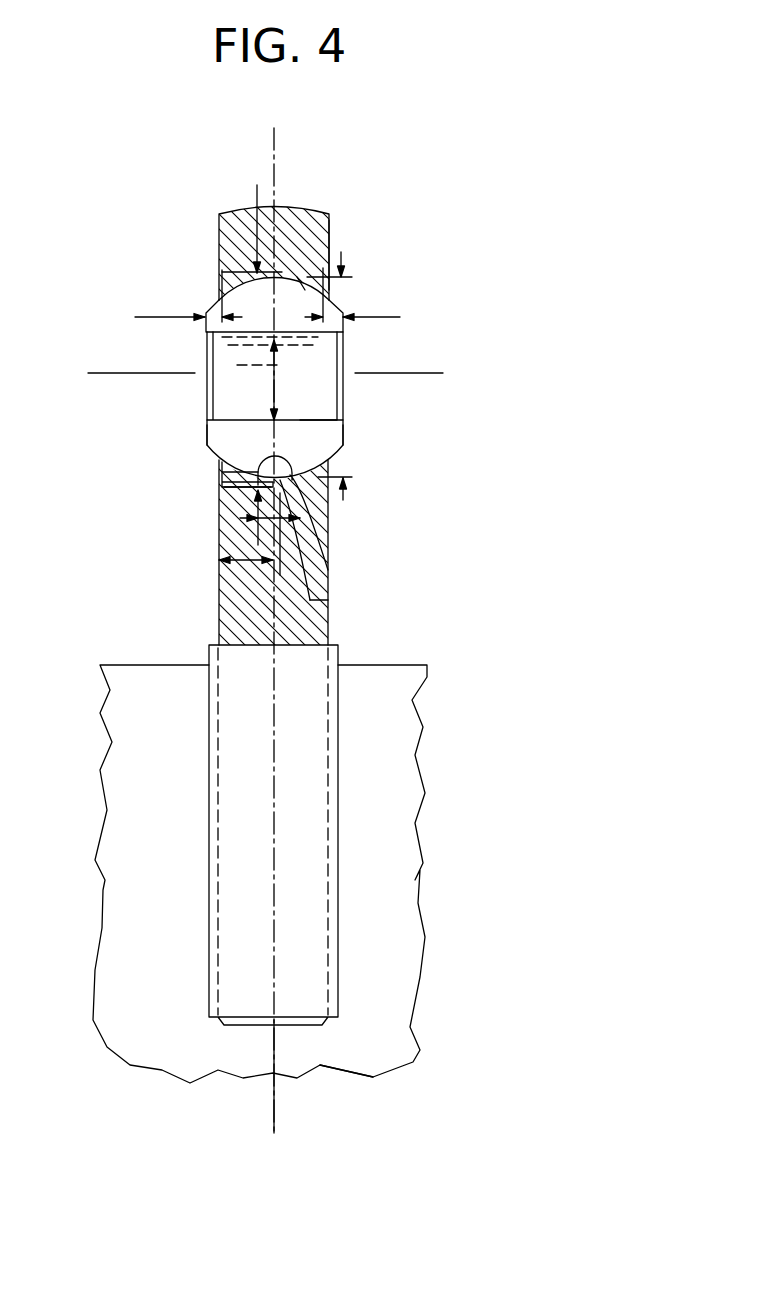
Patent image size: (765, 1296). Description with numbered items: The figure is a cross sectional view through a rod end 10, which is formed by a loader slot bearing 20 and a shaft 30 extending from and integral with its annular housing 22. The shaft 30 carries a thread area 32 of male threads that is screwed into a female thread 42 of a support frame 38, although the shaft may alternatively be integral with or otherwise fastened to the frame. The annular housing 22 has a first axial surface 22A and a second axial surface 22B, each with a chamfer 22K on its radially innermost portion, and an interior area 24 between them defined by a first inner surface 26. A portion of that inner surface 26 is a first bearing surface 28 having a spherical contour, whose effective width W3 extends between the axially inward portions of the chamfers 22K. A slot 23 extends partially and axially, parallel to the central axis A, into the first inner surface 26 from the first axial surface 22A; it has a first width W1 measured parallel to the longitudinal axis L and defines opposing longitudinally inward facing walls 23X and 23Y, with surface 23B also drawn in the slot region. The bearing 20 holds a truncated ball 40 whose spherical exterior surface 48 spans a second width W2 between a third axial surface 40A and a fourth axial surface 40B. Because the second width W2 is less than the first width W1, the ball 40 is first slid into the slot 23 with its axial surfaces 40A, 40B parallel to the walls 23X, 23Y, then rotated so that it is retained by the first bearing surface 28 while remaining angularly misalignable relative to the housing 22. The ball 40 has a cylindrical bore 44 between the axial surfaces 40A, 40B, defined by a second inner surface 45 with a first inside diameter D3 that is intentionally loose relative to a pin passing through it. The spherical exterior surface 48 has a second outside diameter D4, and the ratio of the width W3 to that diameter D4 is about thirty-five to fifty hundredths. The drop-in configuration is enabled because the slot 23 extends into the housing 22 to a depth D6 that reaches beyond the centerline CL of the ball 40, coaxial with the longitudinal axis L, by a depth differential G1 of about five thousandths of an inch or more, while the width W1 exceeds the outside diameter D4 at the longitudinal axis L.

The rod end 10 is at (550, 185).
The loader slot bearing 20 is at (485, 500).
The annular housing 22 is at (229, 234).
The first axial surface 22A is at (219, 263).
The second axial surface 22B is at (329, 237).
The chamfer 22K is at (352, 277).
The slot 23 is at (221, 473).
The longitudinally inward facing wall 23X is at (297, 277).
The longitudinally inward facing wall 23Y is at (328, 533).
The groove bottom surface 23B is at (328, 565).
The interior area 24 is at (205, 290).
The first inner surface 26 is at (222, 478).
The first bearing surface 28 is at (327, 293).
The shaft 30 is at (485, 507).
The thread area 32 is at (218, 782).
The support frame 38 is at (378, 1055).
The truncated ball 40 is at (323, 443).
The third axial surface 40A is at (208, 443).
The fourth axial surface 40B is at (345, 437).
The female thread 42 is at (209, 908).
The cylindrical bore 44 is at (235, 392).
The second inner surface 45 is at (310, 415).
The spherical exterior surface 48 is at (328, 510).
The central axis A is at (133, 373).
The centerline CL is at (276, 205).
The first inside diameter D3 is at (276, 392).
The second outside diameter D4 is at (343, 498).
The depth D6 is at (222, 565).
The depth differential G1 is at (328, 600).
The longitudinal axis L is at (273, 998).
The first width W1 is at (257, 185).
The second width W2 is at (372, 317).
The effective width W3 is at (250, 232).